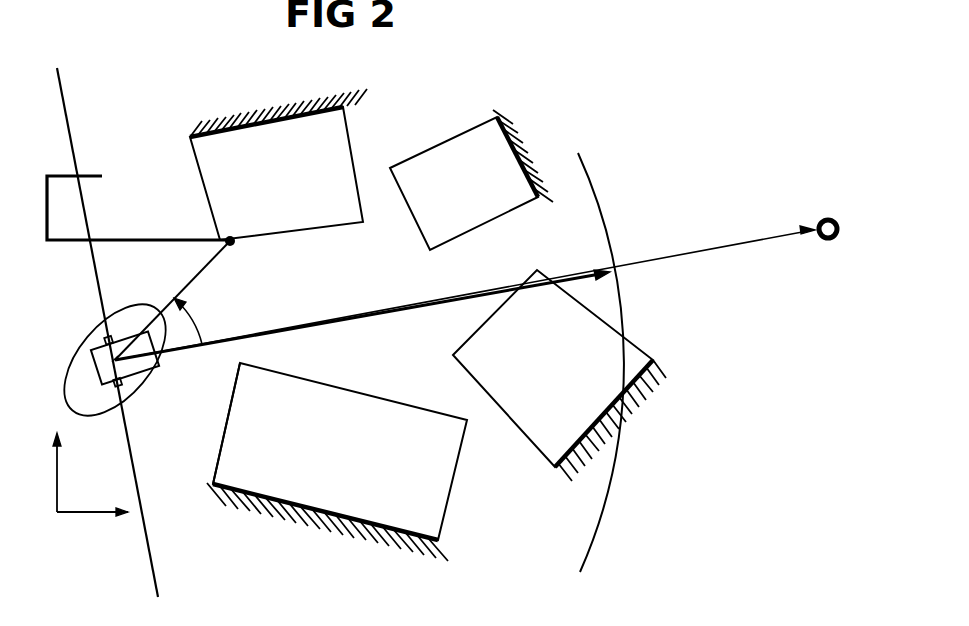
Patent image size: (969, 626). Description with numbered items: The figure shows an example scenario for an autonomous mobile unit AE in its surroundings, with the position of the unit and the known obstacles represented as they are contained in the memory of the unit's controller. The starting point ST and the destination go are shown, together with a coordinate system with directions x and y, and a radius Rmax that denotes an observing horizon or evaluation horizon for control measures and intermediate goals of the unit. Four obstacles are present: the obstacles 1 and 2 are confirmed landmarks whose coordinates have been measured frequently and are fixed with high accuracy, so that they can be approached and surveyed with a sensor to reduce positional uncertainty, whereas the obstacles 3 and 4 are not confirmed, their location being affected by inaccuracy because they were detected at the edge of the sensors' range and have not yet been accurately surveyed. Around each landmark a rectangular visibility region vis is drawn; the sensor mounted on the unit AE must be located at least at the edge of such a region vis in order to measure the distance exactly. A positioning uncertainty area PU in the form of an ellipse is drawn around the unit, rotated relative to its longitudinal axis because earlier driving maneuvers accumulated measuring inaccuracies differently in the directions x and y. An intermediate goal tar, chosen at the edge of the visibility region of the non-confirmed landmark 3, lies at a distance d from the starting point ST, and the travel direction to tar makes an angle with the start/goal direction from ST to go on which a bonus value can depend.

The obstacle 1 is at (337, 469).
The obstacle 2 is at (559, 375).
The obstacle 3 is at (278, 151).
The obstacle 4 is at (480, 180).
The intermediate goal tar is at (141, 211).
The destination go is at (476, 279).
The starting point ST is at (90, 357).
The positioning uncertainty area PU is at (135, 393).
The autonomous mobile unit AE is at (160, 372).
The visibility region vis is at (223, 443).
The distance d is at (172, 300).
The observing horizon Rmax is at (369, 362).
The coordinate system axis x is at (92, 527).
The coordinate system axis y is at (46, 472).